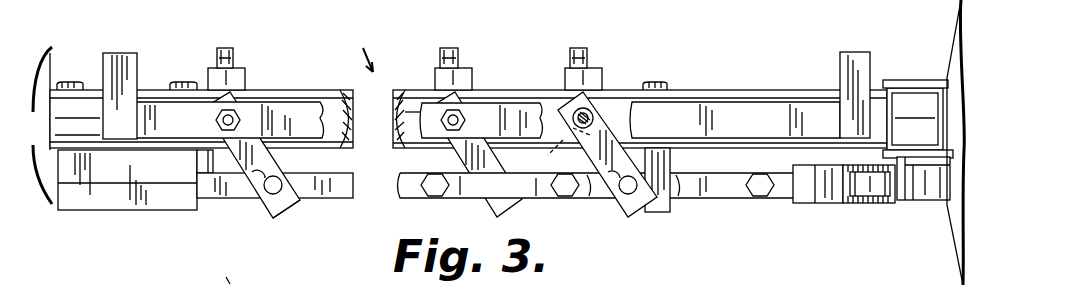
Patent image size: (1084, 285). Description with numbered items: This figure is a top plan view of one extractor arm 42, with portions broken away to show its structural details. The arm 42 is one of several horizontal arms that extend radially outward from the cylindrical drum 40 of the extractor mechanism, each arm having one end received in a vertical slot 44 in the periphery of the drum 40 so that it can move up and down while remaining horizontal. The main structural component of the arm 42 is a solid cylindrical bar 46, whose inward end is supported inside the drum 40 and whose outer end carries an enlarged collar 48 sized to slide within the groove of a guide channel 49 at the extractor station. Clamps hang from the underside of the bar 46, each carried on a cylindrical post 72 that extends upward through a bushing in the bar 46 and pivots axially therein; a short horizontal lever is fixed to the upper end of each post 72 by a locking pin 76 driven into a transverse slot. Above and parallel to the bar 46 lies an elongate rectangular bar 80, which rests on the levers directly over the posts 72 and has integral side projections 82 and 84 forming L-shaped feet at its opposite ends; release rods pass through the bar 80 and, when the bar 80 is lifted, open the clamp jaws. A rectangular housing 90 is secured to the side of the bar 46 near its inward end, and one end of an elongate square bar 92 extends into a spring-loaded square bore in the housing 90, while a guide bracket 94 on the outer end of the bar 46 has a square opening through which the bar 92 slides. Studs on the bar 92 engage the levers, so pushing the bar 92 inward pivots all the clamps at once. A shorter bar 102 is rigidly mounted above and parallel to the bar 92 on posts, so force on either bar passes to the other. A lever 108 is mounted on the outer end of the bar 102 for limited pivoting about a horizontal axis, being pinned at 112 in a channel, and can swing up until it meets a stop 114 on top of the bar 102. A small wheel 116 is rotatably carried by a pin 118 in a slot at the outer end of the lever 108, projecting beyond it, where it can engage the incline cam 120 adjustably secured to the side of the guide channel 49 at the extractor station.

The drum 40 is at (52, 60).
The extractor arm 42 is at (355, 57).
The vertical slot 44 is at (215, 277).
The cylindrical bar 46 is at (400, 105).
The collar 48 is at (918, 93).
The guide channel 49 is at (886, 86).
The cylindrical post 72 is at (592, 113).
The locking pin 76 is at (552, 152).
The horizontal bar 80 is at (740, 108).
The projection 82 is at (850, 63).
The projection 84 is at (133, 62).
The rectangular housing 90 is at (168, 198).
The square bar 92 is at (210, 198).
The guide bracket 94 is at (667, 210).
The shorter bar 102 is at (455, 196).
The lever 108 is at (845, 204).
The pin 112 is at (810, 204).
The stop 114 is at (785, 196).
The wheel 116 is at (880, 198).
The pin 118 is at (870, 204).
The incline cam 120 is at (944, 202).